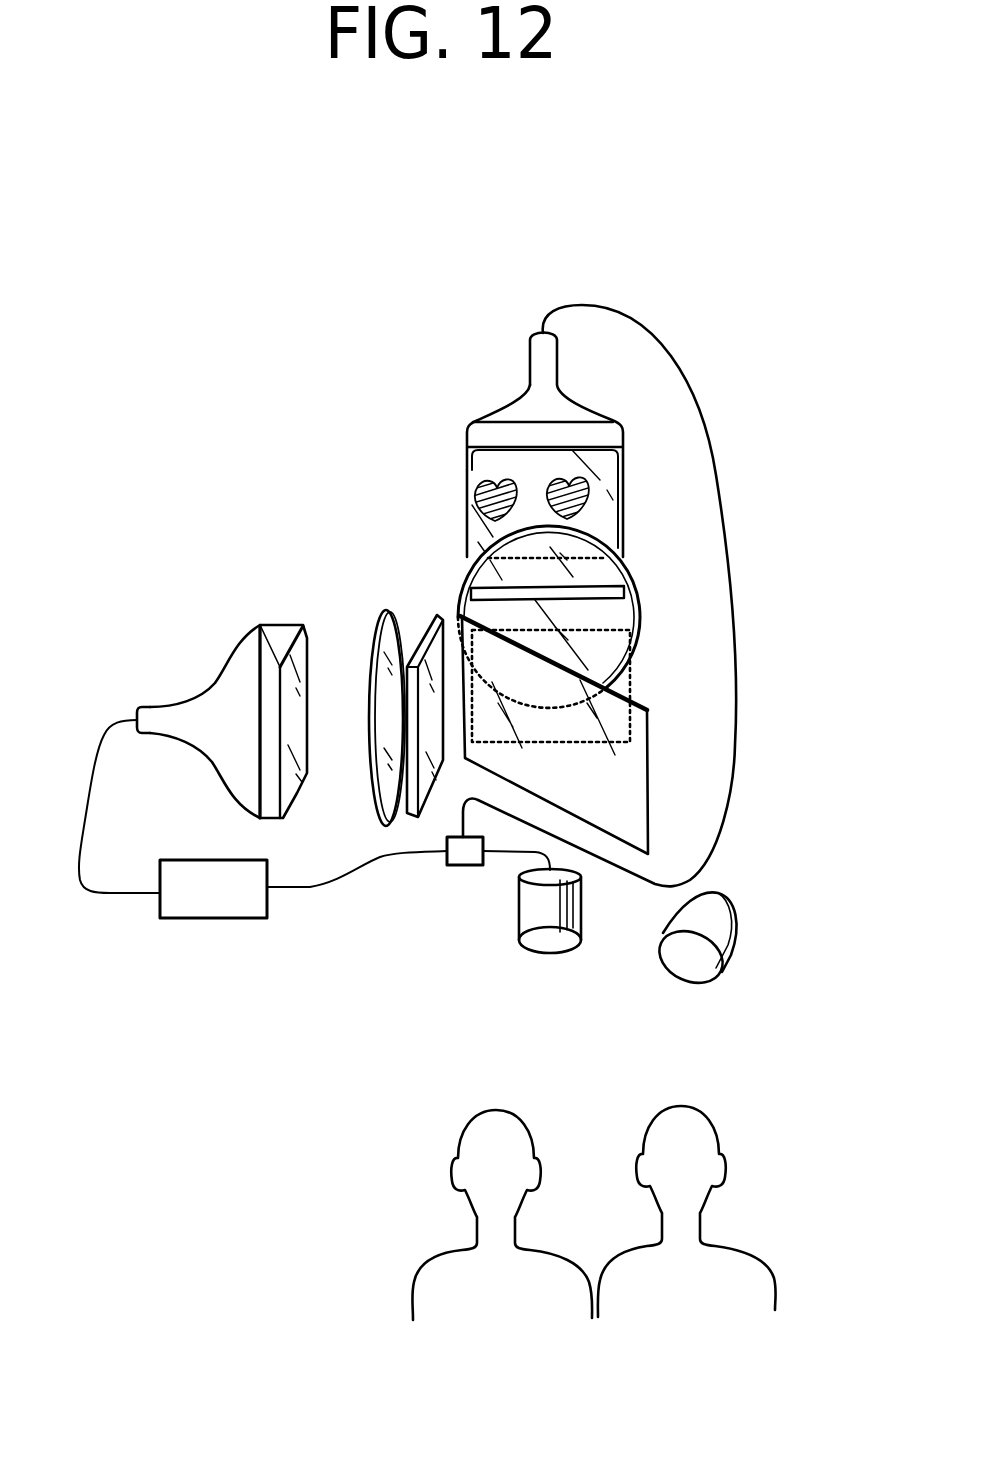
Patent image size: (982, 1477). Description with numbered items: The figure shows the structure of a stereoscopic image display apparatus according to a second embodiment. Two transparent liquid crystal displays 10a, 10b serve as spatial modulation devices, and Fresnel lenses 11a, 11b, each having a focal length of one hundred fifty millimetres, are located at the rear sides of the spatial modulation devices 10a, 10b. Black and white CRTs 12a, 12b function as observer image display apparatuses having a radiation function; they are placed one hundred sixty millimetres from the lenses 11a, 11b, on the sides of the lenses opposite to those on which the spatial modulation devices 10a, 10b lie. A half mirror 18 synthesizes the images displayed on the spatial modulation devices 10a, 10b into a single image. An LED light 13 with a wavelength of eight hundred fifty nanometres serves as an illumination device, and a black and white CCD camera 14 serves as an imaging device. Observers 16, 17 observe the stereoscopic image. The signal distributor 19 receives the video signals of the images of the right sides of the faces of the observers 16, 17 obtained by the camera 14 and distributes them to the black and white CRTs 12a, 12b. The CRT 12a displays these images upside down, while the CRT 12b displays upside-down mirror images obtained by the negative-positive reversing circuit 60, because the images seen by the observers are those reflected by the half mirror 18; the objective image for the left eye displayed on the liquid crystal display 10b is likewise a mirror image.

The black and white CRT 12a is at (514, 396).
The black and white CRT 12b is at (232, 673).
The Fresnel lens 11a is at (627, 567).
The Fresnel lens 11b is at (378, 612).
The transparent liquid crystal display 10a is at (615, 656).
The transparent liquid crystal display 10b is at (432, 618).
The half mirror 18 is at (632, 797).
The negative-positive reversing circuit 60 is at (202, 860).
The signal distributor 19 is at (457, 867).
The black and white CCD camera 14 is at (555, 947).
The LED light 13 is at (716, 983).
The observer 16 is at (747, 1242).
The observer 17 is at (418, 1262).